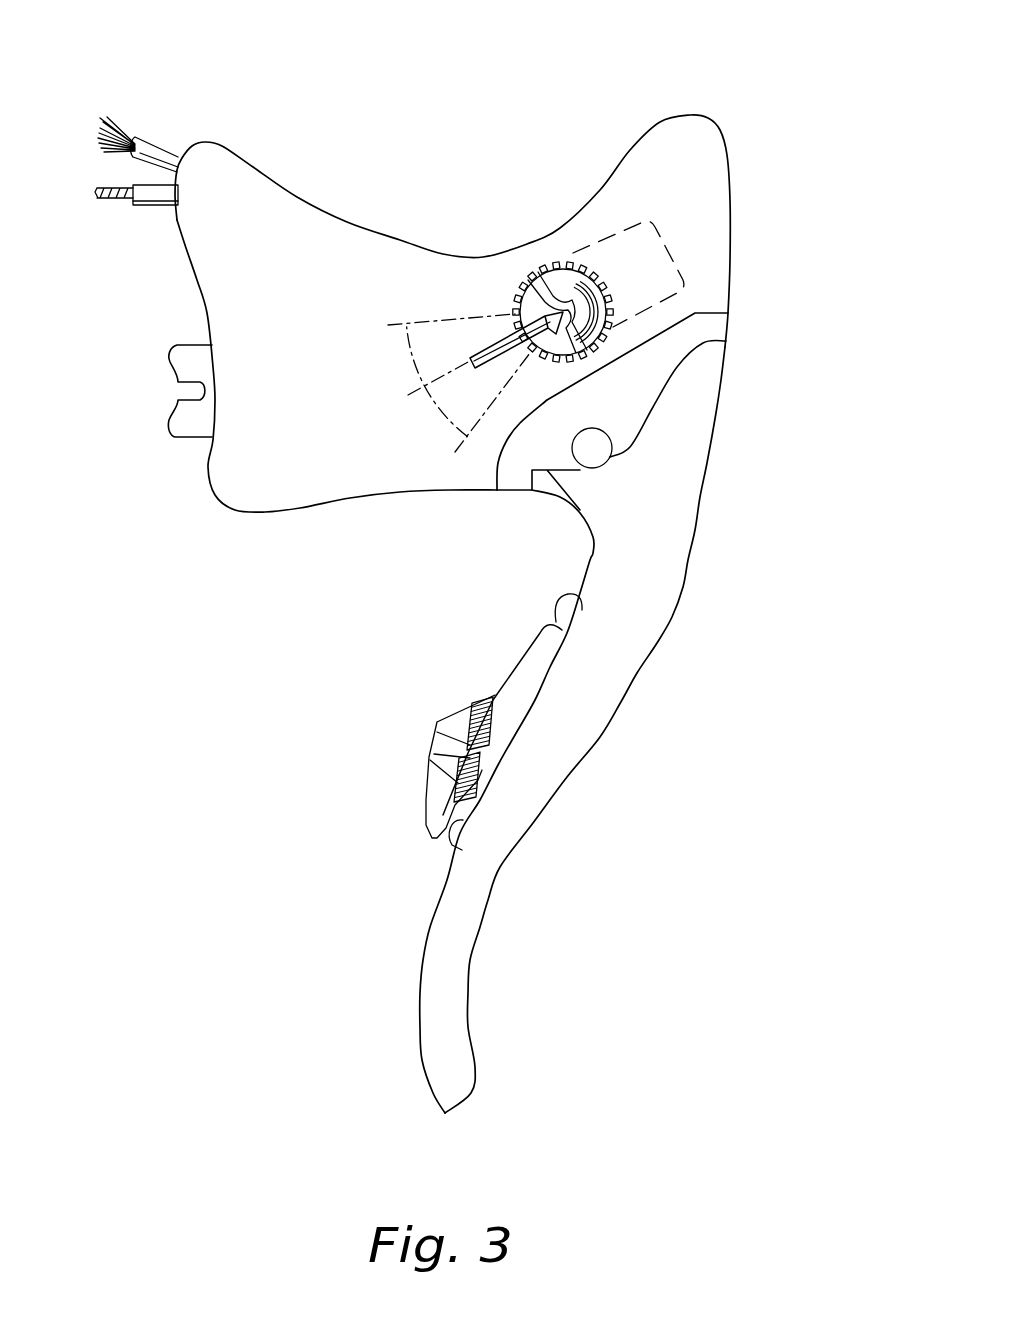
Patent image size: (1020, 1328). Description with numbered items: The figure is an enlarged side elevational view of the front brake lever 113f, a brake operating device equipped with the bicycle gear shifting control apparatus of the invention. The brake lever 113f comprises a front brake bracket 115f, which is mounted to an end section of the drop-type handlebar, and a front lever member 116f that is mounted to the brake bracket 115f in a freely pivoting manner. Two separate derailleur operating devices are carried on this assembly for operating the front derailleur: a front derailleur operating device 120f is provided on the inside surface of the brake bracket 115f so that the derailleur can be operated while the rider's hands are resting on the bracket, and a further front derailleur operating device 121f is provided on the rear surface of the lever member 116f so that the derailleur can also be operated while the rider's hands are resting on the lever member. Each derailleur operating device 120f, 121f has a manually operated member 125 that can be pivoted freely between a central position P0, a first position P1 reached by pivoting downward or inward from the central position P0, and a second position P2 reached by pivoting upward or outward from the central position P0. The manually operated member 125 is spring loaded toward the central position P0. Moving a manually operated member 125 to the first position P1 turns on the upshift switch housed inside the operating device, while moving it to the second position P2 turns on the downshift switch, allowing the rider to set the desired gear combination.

The front brake lever 113f is at (477, 180).
The front brake bracket 115f is at (297, 220).
The front derailleur operating device 120f is at (517, 272).
The manually operated member 125 is at (487, 348).
The front derailleur operating device 121f is at (410, 712).
The front lever member 116f is at (557, 767).
The central position P0 is at (415, 396).
The first position P1 is at (468, 407).
The second position P2 is at (421, 332).